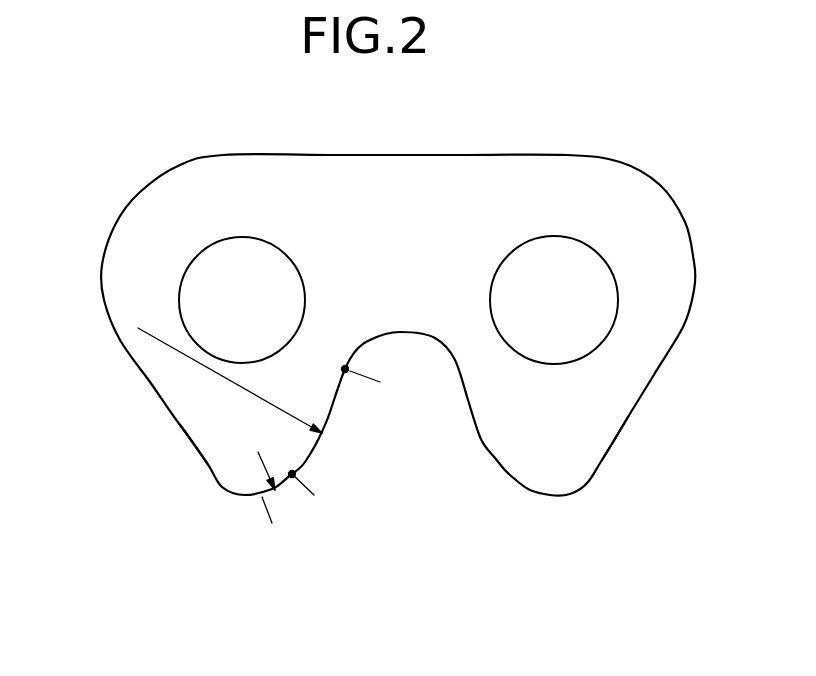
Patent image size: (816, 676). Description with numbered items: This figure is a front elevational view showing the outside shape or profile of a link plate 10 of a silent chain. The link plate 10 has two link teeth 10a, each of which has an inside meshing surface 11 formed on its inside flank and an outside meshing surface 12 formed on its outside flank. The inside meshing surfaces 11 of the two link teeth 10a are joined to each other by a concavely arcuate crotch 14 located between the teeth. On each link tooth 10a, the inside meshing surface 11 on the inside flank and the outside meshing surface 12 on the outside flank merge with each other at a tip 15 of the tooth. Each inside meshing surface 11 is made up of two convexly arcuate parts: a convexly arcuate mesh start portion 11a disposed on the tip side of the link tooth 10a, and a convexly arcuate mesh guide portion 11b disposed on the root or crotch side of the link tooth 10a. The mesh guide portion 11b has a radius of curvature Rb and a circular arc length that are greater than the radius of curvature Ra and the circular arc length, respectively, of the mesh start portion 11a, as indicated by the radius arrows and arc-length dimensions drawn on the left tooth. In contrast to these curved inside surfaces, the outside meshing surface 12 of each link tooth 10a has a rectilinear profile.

The link plate 10 is at (535, 143).
The link tooth 10a is at (220, 440).
The inside meshing surface 11 is at (335, 400).
The convexly arcuate mesh start portion 11a is at (303, 497).
The convexly arcuate mesh guide portion 11b is at (367, 378).
The outside meshing surface 12 is at (147, 388).
The concavely arcuate crotch 14 is at (400, 334).
The tip 15 is at (231, 488).
The radius of curvature of the mesh start portion Ra is at (256, 457).
The radius of curvature of the mesh guide portion Rb is at (224, 363).